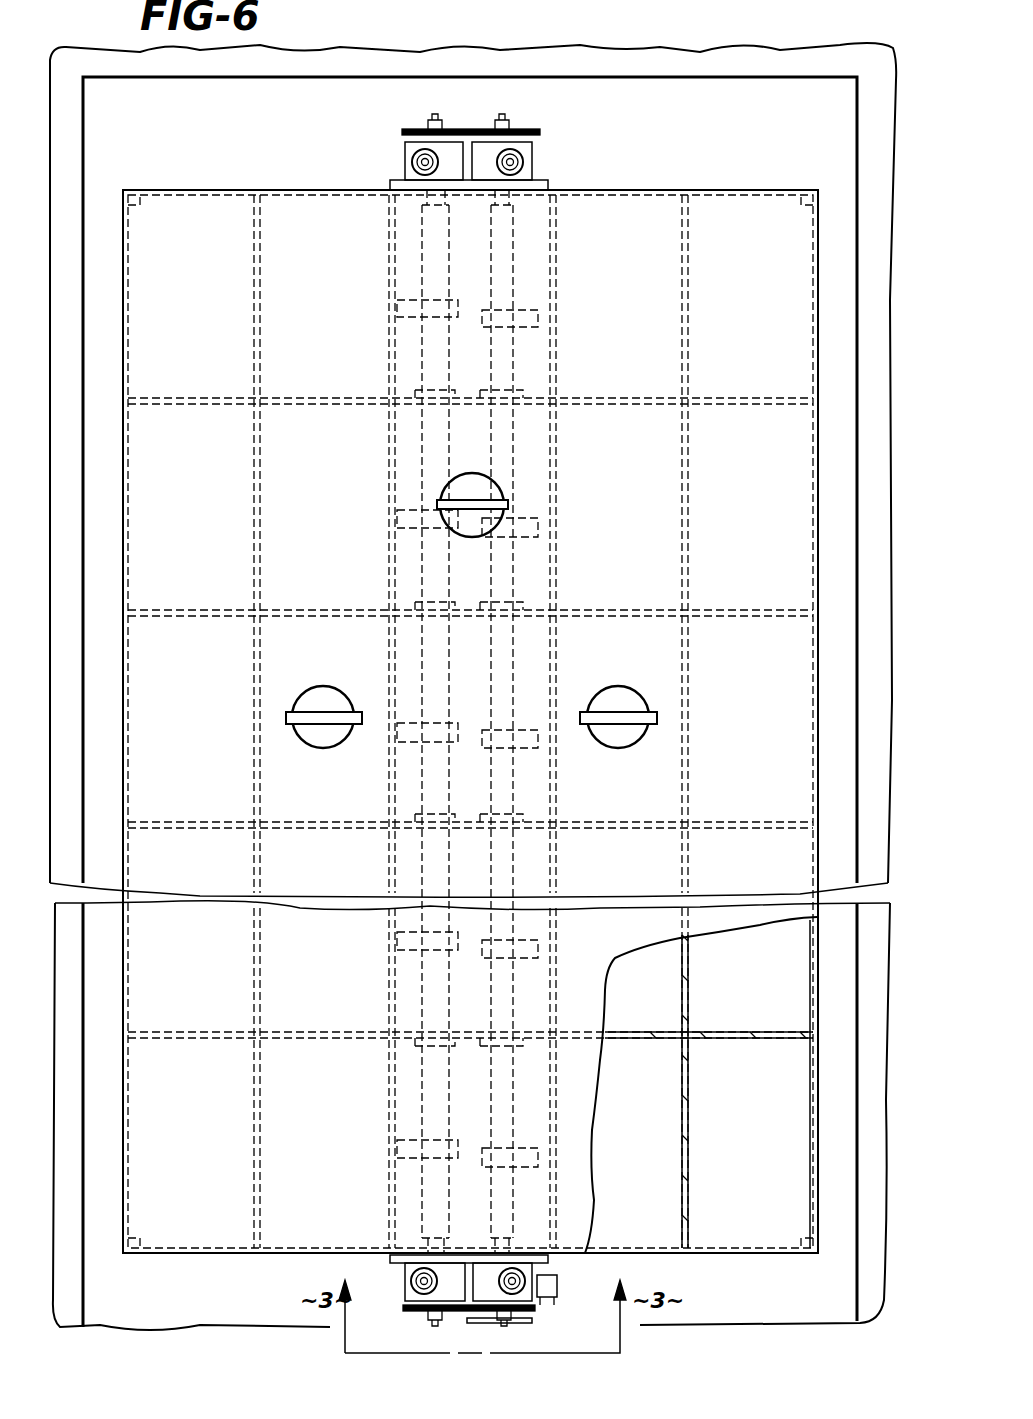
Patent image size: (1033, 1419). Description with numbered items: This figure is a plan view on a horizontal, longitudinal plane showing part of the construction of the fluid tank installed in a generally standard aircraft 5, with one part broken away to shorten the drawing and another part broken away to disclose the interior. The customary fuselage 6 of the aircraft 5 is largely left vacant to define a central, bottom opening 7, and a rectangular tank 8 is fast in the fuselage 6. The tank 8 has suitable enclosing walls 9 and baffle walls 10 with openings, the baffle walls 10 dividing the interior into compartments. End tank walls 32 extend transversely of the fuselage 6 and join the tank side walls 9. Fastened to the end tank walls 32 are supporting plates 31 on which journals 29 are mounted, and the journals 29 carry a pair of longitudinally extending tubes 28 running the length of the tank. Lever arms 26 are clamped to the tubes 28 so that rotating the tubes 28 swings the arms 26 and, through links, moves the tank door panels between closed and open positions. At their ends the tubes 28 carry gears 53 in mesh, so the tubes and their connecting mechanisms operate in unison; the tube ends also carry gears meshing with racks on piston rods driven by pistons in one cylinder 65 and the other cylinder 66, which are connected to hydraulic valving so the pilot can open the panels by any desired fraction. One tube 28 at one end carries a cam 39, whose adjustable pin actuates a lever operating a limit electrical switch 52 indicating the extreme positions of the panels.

The aircraft 5 is at (552, 46).
The fuselage 6 is at (866, 62).
The central bottom opening 7 is at (312, 77).
The rectangular tank 8 is at (648, 190).
The enclosing walls 9 is at (128, 540).
The baffle walls 10 is at (332, 395).
The lever arm 26 is at (540, 318).
The tubes 28 is at (430, 776).
The journals 29 is at (495, 202).
The supporting plates 31 is at (546, 184).
The end tank walls 32 is at (300, 185).
The cam 39 is at (480, 1324).
The limit electrical switch 52 is at (558, 1286).
The gears 53 is at (421, 128).
The cylinder 65 is at (406, 162).
The cylinder 66 is at (524, 160).